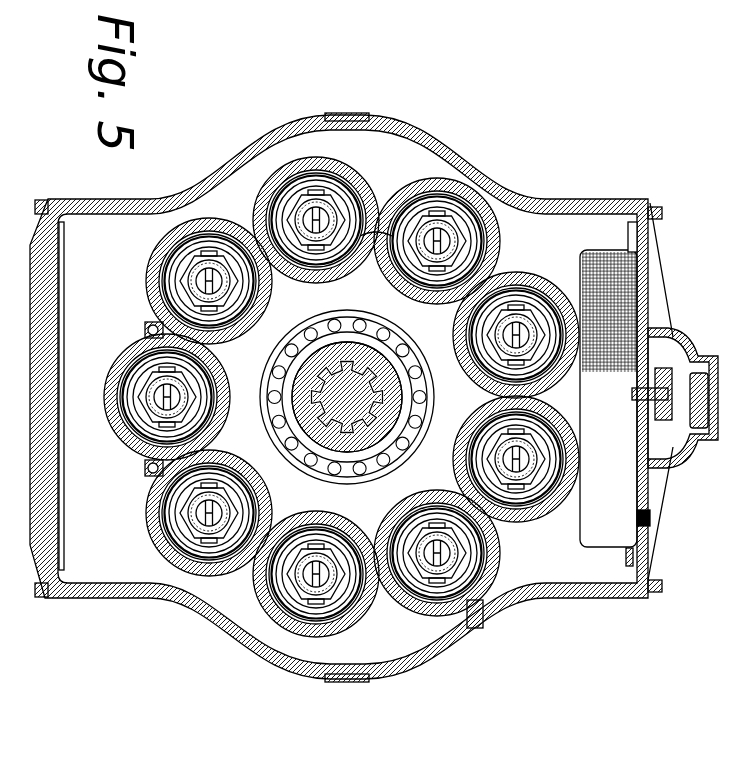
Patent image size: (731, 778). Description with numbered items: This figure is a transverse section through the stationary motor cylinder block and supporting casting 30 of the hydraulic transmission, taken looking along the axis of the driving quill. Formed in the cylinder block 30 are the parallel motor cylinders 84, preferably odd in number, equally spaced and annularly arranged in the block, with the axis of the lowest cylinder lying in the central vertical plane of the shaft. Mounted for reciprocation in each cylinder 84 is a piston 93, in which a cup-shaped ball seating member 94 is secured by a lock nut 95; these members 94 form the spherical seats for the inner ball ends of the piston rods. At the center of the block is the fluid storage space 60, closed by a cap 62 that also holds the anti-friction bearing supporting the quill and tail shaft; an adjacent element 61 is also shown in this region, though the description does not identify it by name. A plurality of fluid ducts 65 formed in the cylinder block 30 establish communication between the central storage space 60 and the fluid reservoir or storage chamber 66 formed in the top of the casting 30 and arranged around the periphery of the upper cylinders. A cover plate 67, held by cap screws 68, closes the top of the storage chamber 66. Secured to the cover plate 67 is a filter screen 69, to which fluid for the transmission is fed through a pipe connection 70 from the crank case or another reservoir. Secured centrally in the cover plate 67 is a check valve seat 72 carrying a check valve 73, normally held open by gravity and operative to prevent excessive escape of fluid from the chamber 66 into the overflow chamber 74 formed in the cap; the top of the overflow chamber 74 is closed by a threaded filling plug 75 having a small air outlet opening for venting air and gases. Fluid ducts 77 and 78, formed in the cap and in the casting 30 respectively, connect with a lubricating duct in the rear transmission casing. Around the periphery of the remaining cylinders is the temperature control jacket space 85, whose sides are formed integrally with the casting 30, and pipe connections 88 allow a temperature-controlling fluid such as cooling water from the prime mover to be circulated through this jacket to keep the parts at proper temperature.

The cylinder block and supporting casting 30 is at (395, 590).
The fluid storage space 60 is at (252, 225).
The nut 61 is at (648, 488).
The cap 62 is at (148, 330).
The fluid ducts 65 is at (483, 395).
The fluid reservoir or storage chamber 66 is at (45, 312).
The cover plate 67 is at (36, 205).
The cap screws 68 is at (664, 213).
The filter screen 69 is at (598, 248).
The pipe connection 70 is at (650, 530).
The check valve seat 72 is at (680, 457).
The check valve 73 is at (622, 417).
The overflow chamber 74 is at (680, 348).
The threaded filling plug 75 is at (712, 370).
The fluid duct 77 is at (342, 347).
The fluid duct 78 is at (398, 430).
The motor cylinders 84 is at (388, 215).
The temperature control jacket space 85 is at (103, 235).
The pipe connections 88 is at (347, 113).
The piston 93 is at (270, 285).
The cup-shaped ball seating members 94 is at (270, 510).
The lock nuts 95 is at (245, 338).